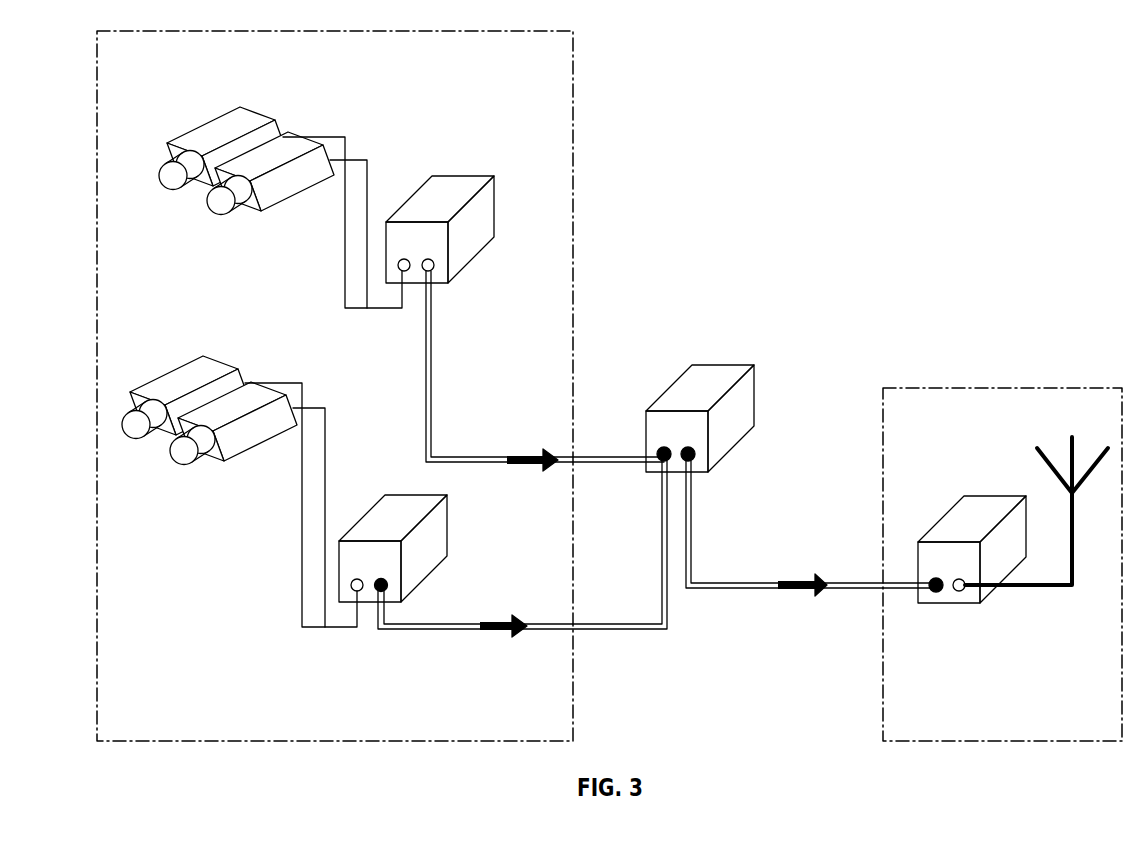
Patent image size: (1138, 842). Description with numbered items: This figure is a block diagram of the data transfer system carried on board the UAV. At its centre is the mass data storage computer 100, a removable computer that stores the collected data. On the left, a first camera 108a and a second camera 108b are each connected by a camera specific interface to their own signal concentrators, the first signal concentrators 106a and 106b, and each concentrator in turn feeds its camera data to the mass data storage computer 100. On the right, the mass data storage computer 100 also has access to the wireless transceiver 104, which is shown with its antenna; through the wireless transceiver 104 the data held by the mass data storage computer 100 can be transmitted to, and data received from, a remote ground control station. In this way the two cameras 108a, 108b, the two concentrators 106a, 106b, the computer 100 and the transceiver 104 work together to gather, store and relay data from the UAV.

The mass data storage computer 100 is at (740, 373).
The wireless transceiver 104 is at (1003, 388).
The first signal concentrator 106a is at (463, 178).
The first signal concentrator 106b is at (437, 558).
The first camera 108a is at (192, 137).
The second camera 108b is at (257, 437).